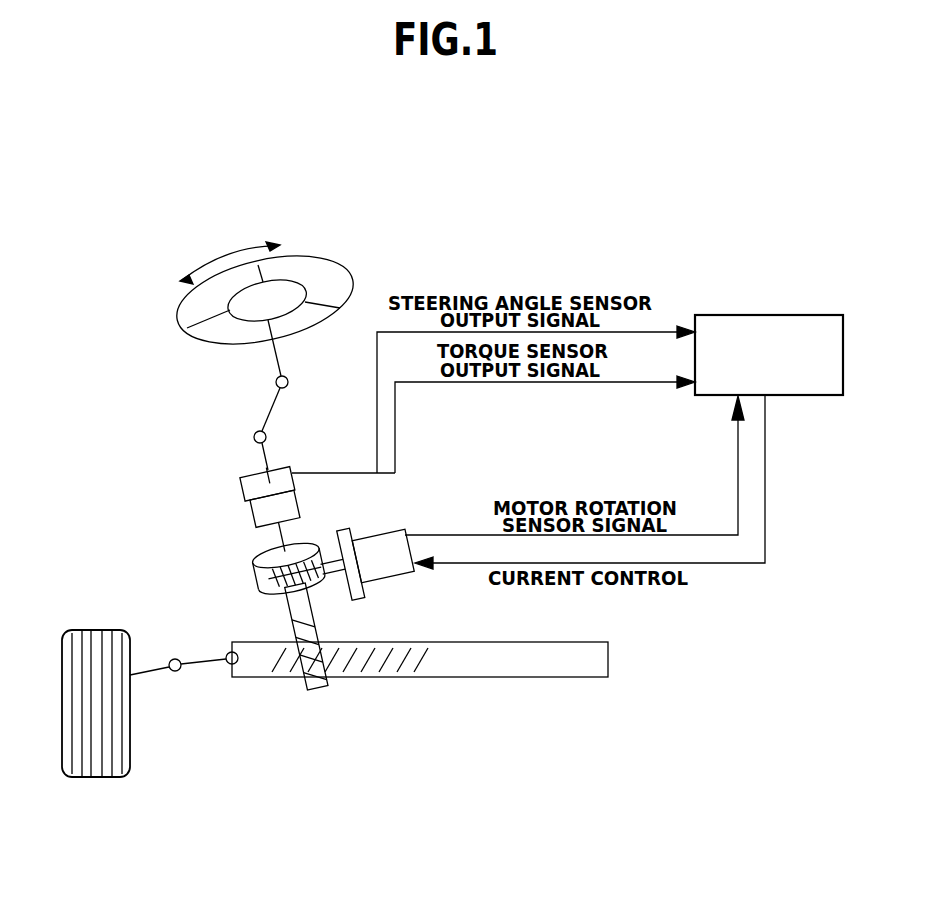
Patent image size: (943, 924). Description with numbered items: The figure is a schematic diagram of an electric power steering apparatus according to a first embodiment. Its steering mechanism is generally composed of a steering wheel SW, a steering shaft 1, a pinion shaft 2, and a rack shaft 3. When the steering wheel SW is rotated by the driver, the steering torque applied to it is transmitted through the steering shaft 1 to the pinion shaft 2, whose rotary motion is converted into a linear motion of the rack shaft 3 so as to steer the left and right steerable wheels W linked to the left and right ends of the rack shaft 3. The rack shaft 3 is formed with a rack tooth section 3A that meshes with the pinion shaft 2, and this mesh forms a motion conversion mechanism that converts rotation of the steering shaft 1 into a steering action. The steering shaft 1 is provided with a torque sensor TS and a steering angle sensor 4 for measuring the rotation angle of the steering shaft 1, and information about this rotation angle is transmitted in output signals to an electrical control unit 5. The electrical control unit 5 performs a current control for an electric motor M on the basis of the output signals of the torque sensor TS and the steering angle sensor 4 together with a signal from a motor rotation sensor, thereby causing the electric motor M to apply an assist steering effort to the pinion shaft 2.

The steering wheel SW is at (337, 262).
The steering shaft 1 is at (260, 457).
The steering angle sensor 4 is at (241, 481).
The torque sensor TS is at (247, 521).
The pinion shaft 2 is at (285, 615).
The electric motor M is at (385, 537).
The rack shaft 3 is at (492, 668).
The rack tooth section 3A is at (402, 647).
The steerable wheels W is at (98, 637).
The electrical control unit (ECU) 5 is at (758, 322).